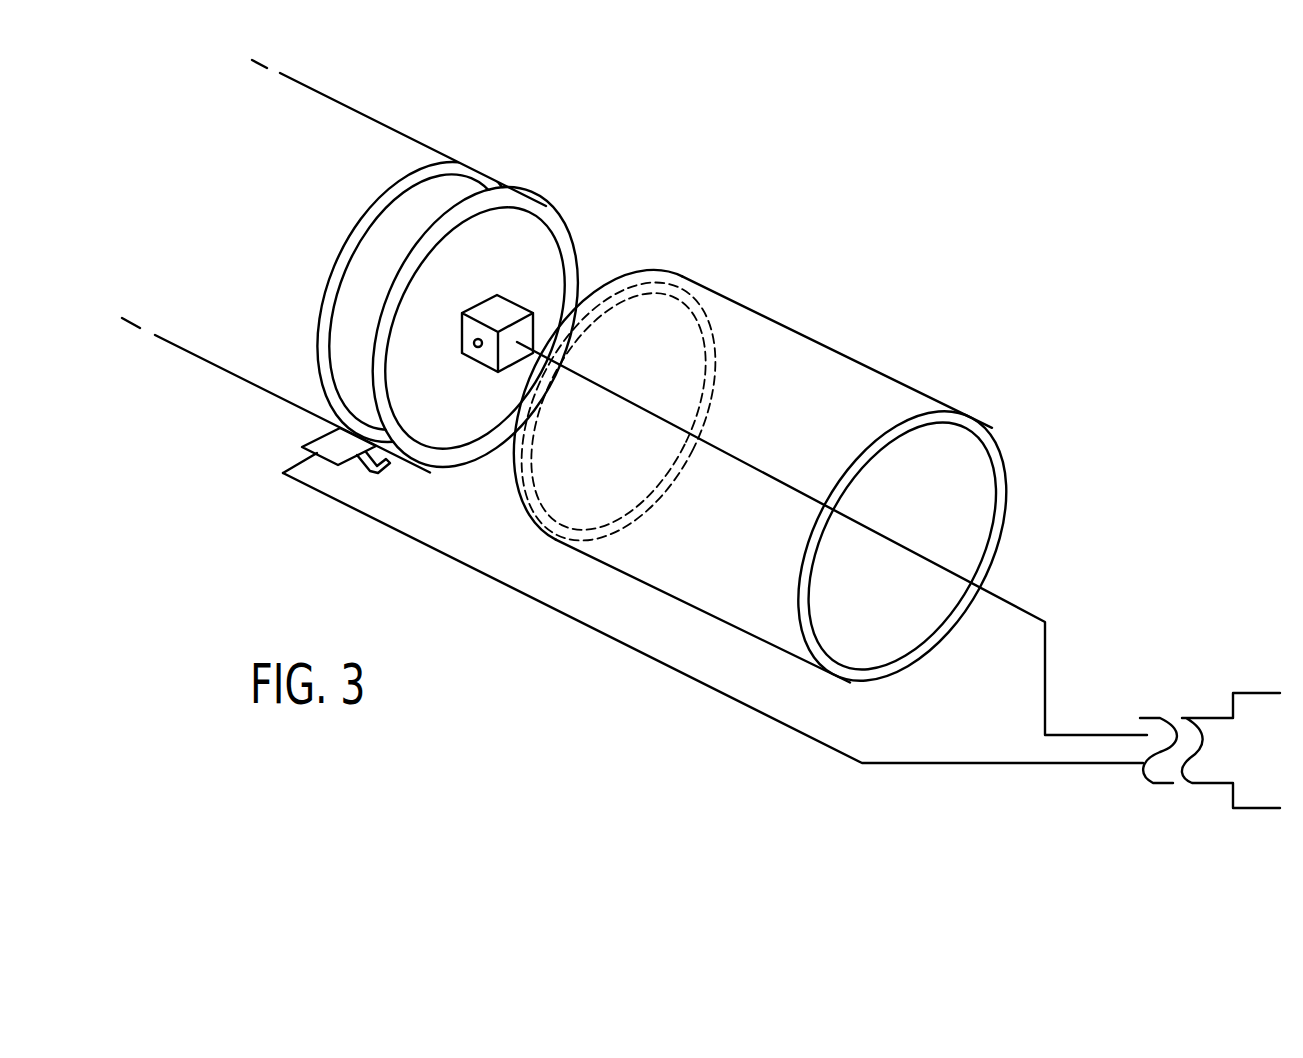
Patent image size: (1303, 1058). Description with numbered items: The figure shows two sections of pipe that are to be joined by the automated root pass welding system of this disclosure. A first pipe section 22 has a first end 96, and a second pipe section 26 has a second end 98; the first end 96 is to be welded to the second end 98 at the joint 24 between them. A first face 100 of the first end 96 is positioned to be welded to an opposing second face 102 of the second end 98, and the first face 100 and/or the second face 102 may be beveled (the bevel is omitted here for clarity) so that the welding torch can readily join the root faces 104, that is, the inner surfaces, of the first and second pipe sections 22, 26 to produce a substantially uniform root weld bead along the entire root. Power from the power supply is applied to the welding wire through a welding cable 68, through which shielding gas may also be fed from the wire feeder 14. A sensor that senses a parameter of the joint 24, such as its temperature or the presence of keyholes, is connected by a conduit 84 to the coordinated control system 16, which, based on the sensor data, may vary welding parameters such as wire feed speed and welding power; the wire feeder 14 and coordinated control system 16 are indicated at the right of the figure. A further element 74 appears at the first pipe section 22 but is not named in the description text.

The wire feeder 14 is at (1210, 750).
The coordinated control system 16 is at (1210, 750).
The first pipe section 22 is at (430, 150).
The joint 24 is at (622, 228).
The second pipe section 26 is at (805, 338).
The welding cable 68 is at (715, 690).
The collar 74 is at (387, 323).
The conduit 84 is at (1047, 678).
The first end 96 is at (597, 215).
The second end 98 is at (647, 243).
The first face 100 is at (383, 413).
The second face 102 is at (522, 450).
The root faces 104 is at (387, 367).